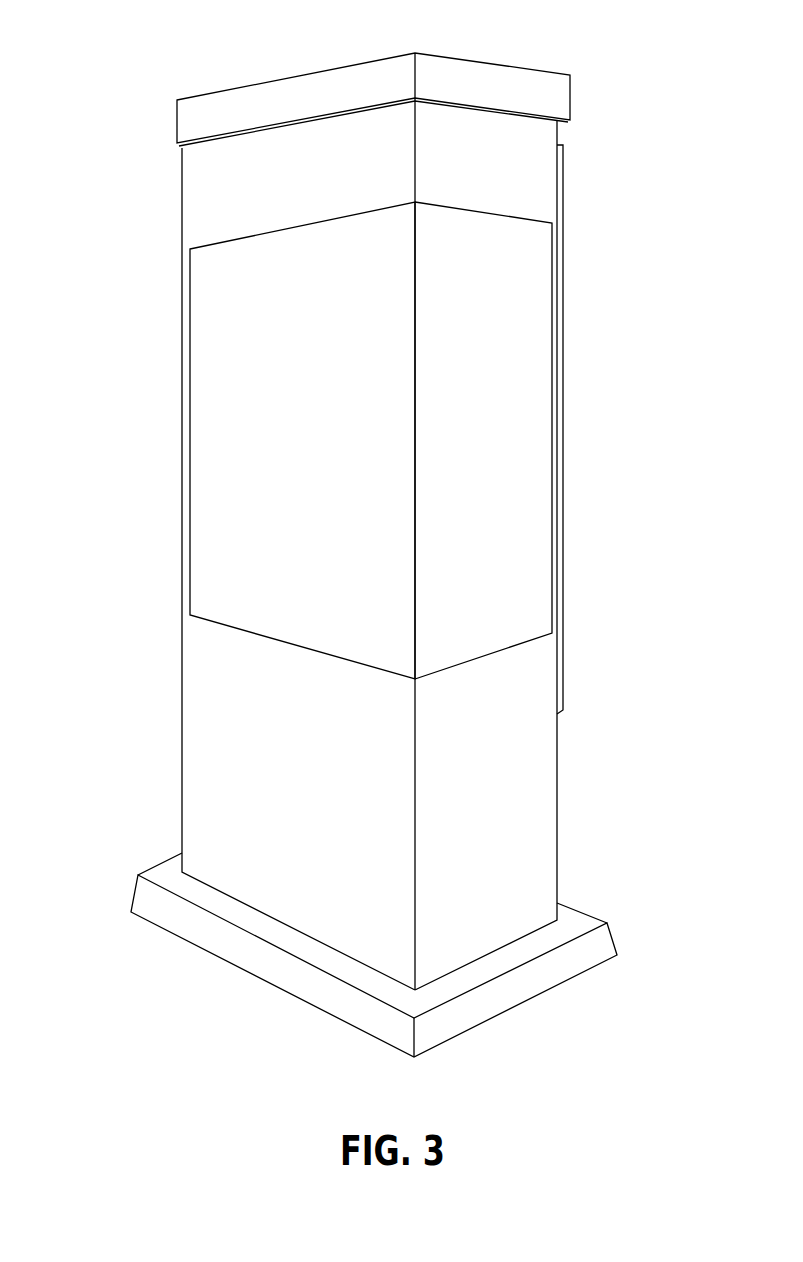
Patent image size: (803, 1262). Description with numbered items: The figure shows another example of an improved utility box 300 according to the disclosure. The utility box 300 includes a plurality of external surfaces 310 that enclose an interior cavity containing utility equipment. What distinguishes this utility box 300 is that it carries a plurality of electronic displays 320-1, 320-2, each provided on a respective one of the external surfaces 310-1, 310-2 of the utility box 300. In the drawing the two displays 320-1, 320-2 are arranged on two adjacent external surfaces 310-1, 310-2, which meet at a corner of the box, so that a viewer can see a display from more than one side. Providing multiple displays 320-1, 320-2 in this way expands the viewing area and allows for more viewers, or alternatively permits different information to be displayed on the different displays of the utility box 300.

The utility box 300 is at (371, 565).
The external surfaces 310 is at (371, 605).
The external surface 310-1 is at (277, 838).
The external surface 310-2 is at (492, 865).
The electronic display 320-1 is at (268, 477).
The electronic display 320-2 is at (503, 467).